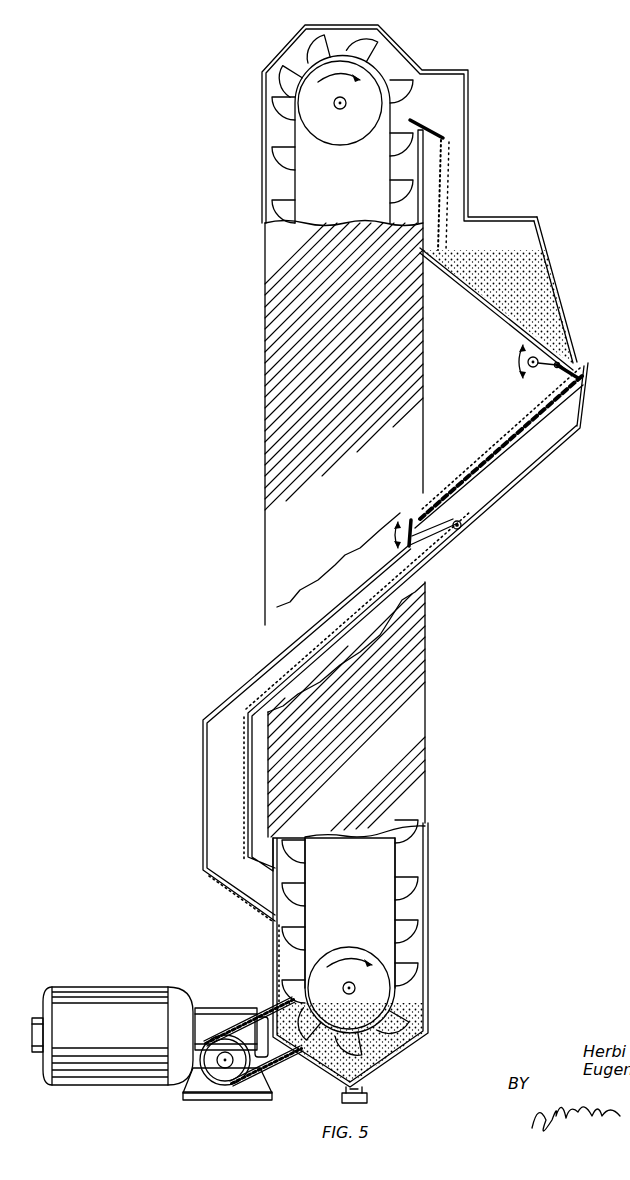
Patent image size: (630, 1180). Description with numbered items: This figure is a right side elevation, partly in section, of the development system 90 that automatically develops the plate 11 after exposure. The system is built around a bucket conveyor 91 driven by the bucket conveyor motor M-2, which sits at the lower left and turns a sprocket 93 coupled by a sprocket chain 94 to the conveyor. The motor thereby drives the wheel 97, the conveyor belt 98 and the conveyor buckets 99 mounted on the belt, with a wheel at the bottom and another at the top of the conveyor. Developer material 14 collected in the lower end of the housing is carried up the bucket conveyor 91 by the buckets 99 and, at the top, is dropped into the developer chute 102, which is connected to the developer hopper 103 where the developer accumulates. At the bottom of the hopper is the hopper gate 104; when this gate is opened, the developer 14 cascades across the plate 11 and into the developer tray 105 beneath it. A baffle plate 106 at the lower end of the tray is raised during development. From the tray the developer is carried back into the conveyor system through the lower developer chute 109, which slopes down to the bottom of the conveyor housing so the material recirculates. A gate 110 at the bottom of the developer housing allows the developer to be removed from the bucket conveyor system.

The plate 11 is at (519, 436).
The developer material 14 is at (557, 325).
The development system 90 is at (440, 690).
The bucket conveyor 91 is at (425, 716).
The sprocket 93 is at (250, 1068).
The sprocket chain 94 is at (265, 1000).
The wheel 97 is at (342, 133).
The conveyor belt 98 is at (397, 862).
The conveyor buckets 99 is at (401, 890).
The developer chute 102 is at (461, 183).
The developer hopper 103 is at (541, 228).
The hopper gate 104 is at (560, 373).
The developer tray 105 is at (520, 486).
The baffle plate 106 is at (408, 520).
The lower developer chute 109 is at (217, 795).
The gate 110 is at (365, 1100).
The bucket conveyor motor M-2 is at (103, 993).